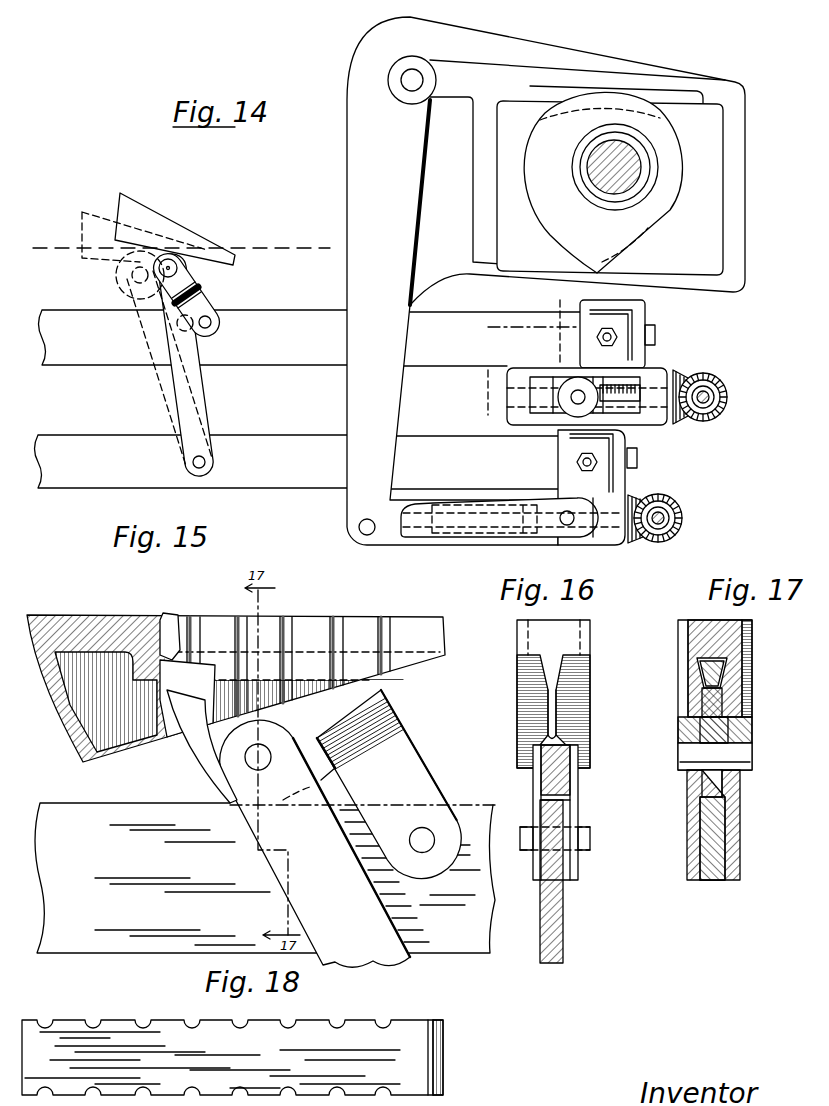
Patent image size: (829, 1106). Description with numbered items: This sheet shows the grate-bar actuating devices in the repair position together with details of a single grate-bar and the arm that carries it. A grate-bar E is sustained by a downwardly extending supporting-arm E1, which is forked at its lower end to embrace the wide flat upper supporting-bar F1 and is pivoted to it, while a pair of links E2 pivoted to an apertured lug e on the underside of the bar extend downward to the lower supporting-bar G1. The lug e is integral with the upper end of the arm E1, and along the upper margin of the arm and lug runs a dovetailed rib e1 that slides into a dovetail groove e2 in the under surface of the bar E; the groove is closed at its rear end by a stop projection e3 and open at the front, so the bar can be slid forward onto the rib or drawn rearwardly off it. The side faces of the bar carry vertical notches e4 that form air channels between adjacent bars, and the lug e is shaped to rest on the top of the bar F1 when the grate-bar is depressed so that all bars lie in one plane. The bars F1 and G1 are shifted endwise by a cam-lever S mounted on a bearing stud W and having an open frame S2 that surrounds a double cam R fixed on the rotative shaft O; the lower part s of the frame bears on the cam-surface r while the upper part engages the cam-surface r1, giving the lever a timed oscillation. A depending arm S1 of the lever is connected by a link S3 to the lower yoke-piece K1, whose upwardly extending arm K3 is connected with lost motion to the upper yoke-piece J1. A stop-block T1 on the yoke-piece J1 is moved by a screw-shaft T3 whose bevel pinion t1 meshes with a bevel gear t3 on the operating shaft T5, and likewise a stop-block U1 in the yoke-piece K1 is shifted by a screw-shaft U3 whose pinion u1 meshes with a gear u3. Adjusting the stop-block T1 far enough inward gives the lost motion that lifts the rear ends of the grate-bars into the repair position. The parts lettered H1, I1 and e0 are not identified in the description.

In FIG. 14, the bearing stud W is at (404, 68).
In FIG. 14, the cam-lever S is at (546, 281).
In FIG. 14, the depending arm S1 is at (461, 245).
In FIG. 14, the open frame S2 is at (615, 180).
In FIG. 14, the link S3 is at (380, 549).
In FIG. 14, the rotative shaft O is at (640, 168).
In FIG. 14, the double cam R is at (603, 182).
In FIG. 14, the cam bearing-surface r is at (638, 233).
In FIG. 14, the cam bearing-surface r1 is at (672, 190).
In FIG. 14, the lower frame part s is at (555, 268).
In FIG. 14, the grate-bar E is at (190, 238).
In FIG. 15, the grate-bar E is at (120, 606).
In FIG. 16, the grate-bar E is at (677, 648).
In FIG. 17, the grate-bar E is at (715, 695).
In FIG. 18, the grate-bar E is at (232, 1057).
In FIG. 14, the supporting-arm E1 is at (206, 290).
In FIG. 15, the supporting-arm E1 is at (380, 749).
In FIG. 16, the supporting-arm E1 is at (578, 797).
In FIG. 14, the link E2 is at (212, 390).
In FIG. 15, the link E2 is at (315, 843).
In FIG. 17, the link E2 is at (745, 814).
In FIG. 14, the apertured lug e is at (140, 262).
In FIG. 15, the apertured lug e is at (202, 746).
In FIG. 15, the grooves e0 is at (290, 624).
In FIG. 15, the dovetailed rib e1 is at (187, 698).
In FIG. 16, the dovetailed rib e1 is at (565, 680).
In FIG. 17, the dovetailed rib e1 is at (722, 668).
In FIG. 15, the dovetail groove e2 is at (178, 617).
In FIG. 16, the dovetail groove e2 is at (554, 636).
In FIG. 17, the dovetail groove e2 is at (727, 660).
In FIG. 15, the stop projection e3 is at (85, 700).
In FIG. 18, the vertical notches e4 is at (383, 1020).
In FIG. 14, the upper supporting-bar F1 is at (310, 338).
In FIG. 15, the upper supporting-bar F1 is at (265, 878).
In FIG. 16, the upper supporting-bar F1 is at (565, 942).
In FIG. 17, the upper supporting-bar F1 is at (722, 730).
In FIG. 14, the lower supporting-bar G1 is at (308, 462).
In FIG. 14, the bracket plate H1 is at (633, 323).
In FIG. 14, the upper yoke-piece J1 is at (664, 352).
In FIG. 14, the lower yoke-piece K1 is at (605, 547).
In FIG. 14, the upwardly-extending arm K3 is at (578, 403).
In FIG. 14, the adjustable stop-block T1 is at (535, 420).
In FIG. 14, the screw-shaft T3 is at (632, 412).
In FIG. 14, the operating-shaft T5 is at (728, 397).
In FIG. 14, the beveled gear-pinion t1 is at (698, 380).
In FIG. 14, the beveled gear-wheel t3 is at (720, 390).
In FIG. 14, the bracket I1 is at (613, 481).
In FIG. 14, the stop-block U1 is at (533, 537).
In FIG. 14, the screw-shaft U3 is at (683, 515).
In FIG. 14, the gear-pinion u1 is at (640, 537).
In FIG. 14, the beveled gear-wheel u3 is at (682, 528).